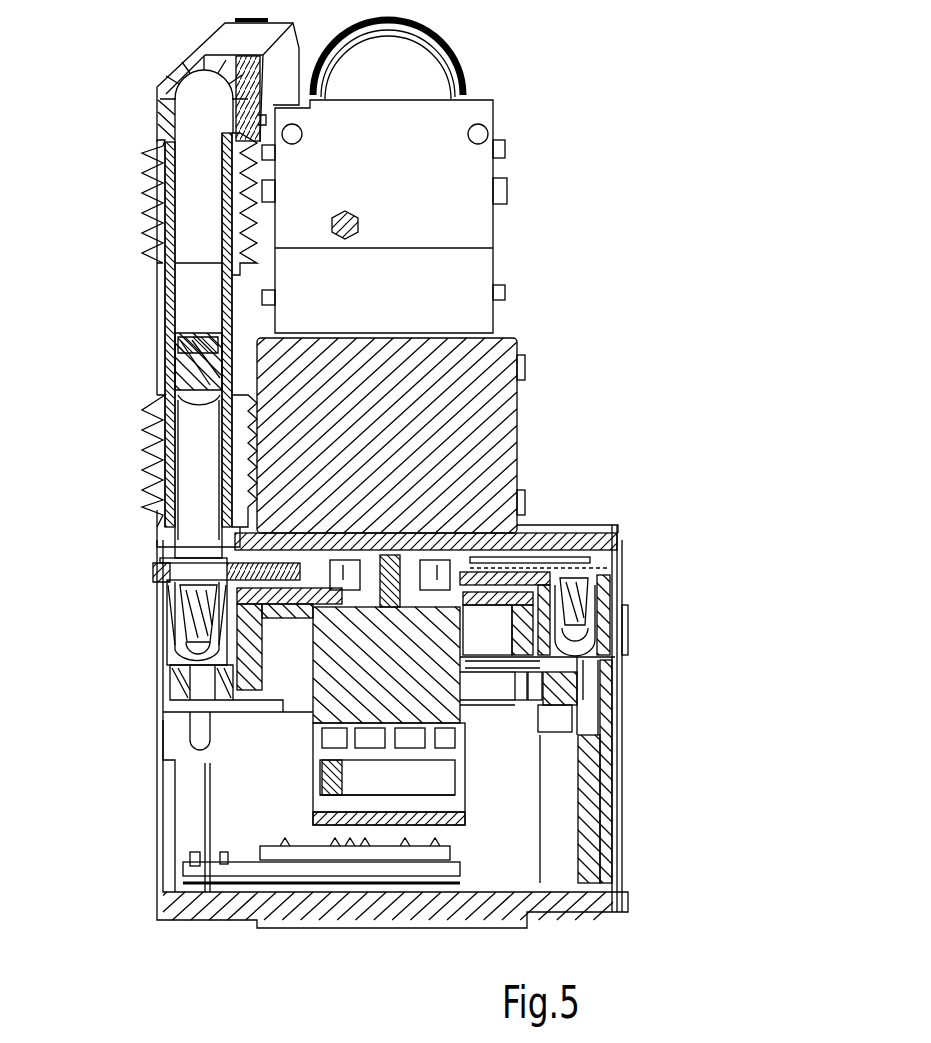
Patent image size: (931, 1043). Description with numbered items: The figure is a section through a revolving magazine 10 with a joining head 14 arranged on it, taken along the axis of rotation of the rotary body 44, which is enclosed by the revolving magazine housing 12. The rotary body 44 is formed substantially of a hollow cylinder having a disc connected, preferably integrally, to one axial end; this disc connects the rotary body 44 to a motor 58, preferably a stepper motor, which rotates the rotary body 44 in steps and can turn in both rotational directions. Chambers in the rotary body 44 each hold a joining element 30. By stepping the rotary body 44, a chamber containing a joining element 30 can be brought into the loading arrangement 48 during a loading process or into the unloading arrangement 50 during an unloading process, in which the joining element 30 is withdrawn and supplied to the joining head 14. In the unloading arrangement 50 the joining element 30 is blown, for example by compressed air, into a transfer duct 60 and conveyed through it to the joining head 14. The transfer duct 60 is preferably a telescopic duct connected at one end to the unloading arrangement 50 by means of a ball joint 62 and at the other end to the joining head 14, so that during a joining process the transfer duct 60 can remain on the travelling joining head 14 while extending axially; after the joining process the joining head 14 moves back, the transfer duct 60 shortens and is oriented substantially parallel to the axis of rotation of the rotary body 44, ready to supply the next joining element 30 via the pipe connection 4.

The pipe connection 4 is at (155, 733).
The revolving magazine 10 is at (645, 573).
The revolving magazine housing 12 is at (630, 900).
The joining head 14 is at (543, 332).
The joining element 30 is at (176, 358).
The rotary body 44 is at (625, 635).
The loading arrangement 48 is at (635, 509).
The unloading arrangement 50 is at (142, 567).
The motor 58 is at (445, 708).
The transfer duct 60 is at (205, 503).
The ball joint 62 is at (150, 566).